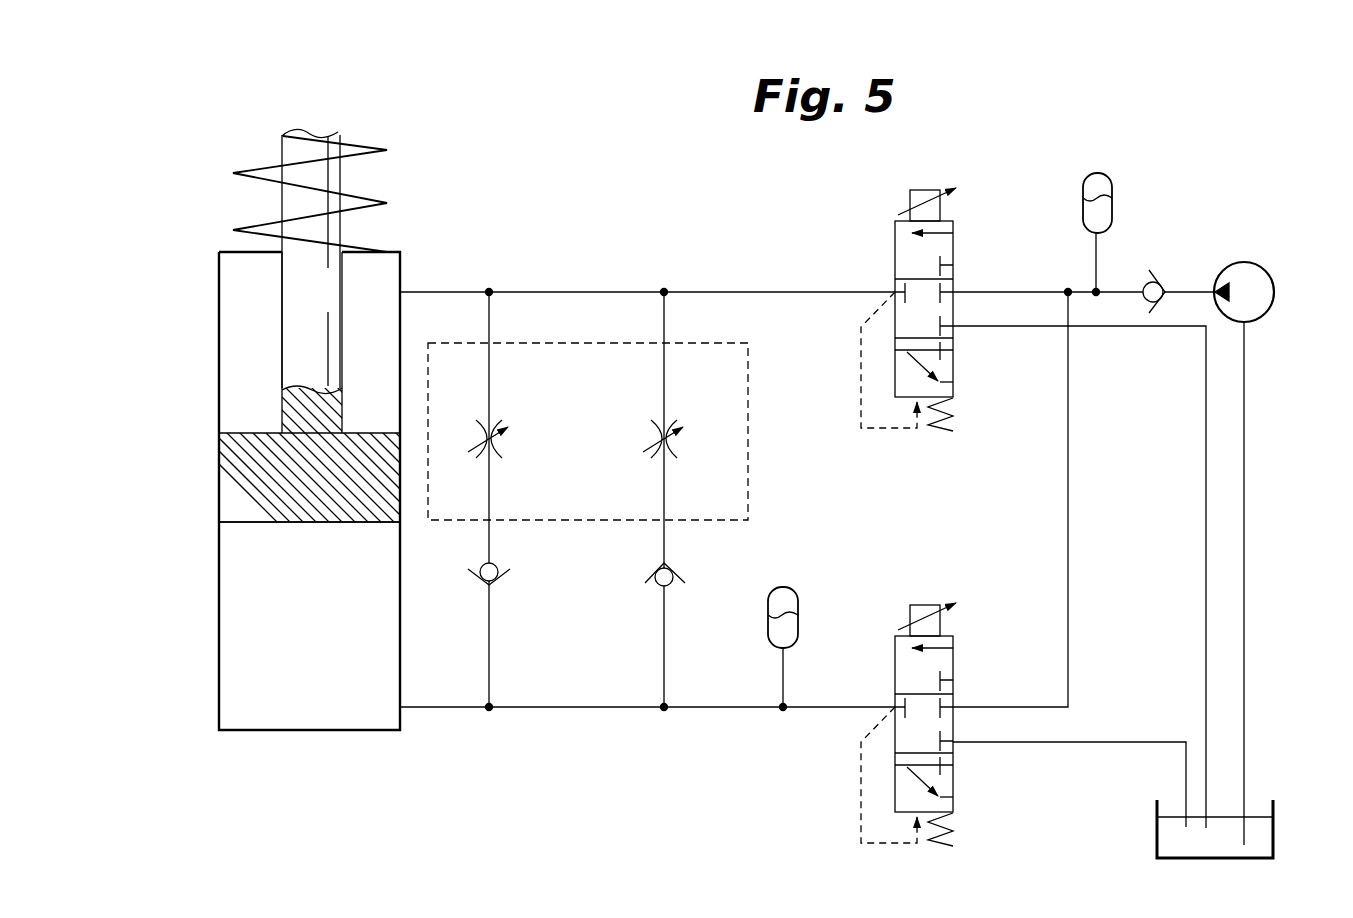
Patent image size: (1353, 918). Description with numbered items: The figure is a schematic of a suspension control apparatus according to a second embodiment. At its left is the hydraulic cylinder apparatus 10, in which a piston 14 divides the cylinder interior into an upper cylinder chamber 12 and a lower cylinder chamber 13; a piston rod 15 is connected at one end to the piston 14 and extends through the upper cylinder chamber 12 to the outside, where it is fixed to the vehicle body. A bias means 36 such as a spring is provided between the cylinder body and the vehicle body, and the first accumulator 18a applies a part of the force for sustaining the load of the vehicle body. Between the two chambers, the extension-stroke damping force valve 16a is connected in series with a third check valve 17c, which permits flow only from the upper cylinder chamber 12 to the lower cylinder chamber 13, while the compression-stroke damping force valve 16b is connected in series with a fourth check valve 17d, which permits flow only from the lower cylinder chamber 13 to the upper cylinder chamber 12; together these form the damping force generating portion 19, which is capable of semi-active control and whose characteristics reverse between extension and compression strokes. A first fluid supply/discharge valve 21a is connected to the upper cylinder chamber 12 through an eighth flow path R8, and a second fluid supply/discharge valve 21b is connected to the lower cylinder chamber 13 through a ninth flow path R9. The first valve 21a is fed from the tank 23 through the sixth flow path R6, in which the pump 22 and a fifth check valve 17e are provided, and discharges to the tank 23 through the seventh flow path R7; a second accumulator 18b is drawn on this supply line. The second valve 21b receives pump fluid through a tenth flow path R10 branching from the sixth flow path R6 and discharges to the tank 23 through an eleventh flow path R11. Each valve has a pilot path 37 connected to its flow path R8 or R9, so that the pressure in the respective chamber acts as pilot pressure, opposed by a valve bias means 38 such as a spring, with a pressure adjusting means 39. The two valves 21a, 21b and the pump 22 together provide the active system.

The hydraulic cylinder apparatus 10 is at (212, 618).
The upper cylinder chamber 12 is at (258, 347).
The lower cylinder chamber 13 is at (267, 557).
The piston 14 is at (243, 460).
The piston rod 15 is at (297, 293).
The bias means 36 is at (370, 188).
The eighth flow path R8 is at (715, 292).
The ninth flow path R9 is at (690, 707).
The tenth flow path R10 is at (1070, 522).
The sixth flow path R6 is at (995, 292).
The seventh flow path R7 is at (1120, 326).
The eleventh flow path R11 is at (1128, 742).
The damping force generating portion 19 is at (553, 521).
The extension-stroke damping force valve 16a is at (655, 436).
The compression-stroke damping force valve 16b is at (495, 432).
The third check valve 17c is at (660, 587).
The fourth check valve 17d is at (481, 568).
The fifth check valve 17e is at (1152, 270).
The first accumulator 18a is at (790, 588).
The second accumulator 18b is at (1108, 173).
The first fluid supply/discharge valve 21a is at (957, 256).
The second fluid supply/discharge valve 21b is at (967, 650).
The pressure adjusting means 39 is at (922, 193).
The valve bias means 38 is at (955, 412).
The pilot path 37 is at (895, 430).
The pump 22 is at (1270, 273).
The tank 23 is at (1275, 822).